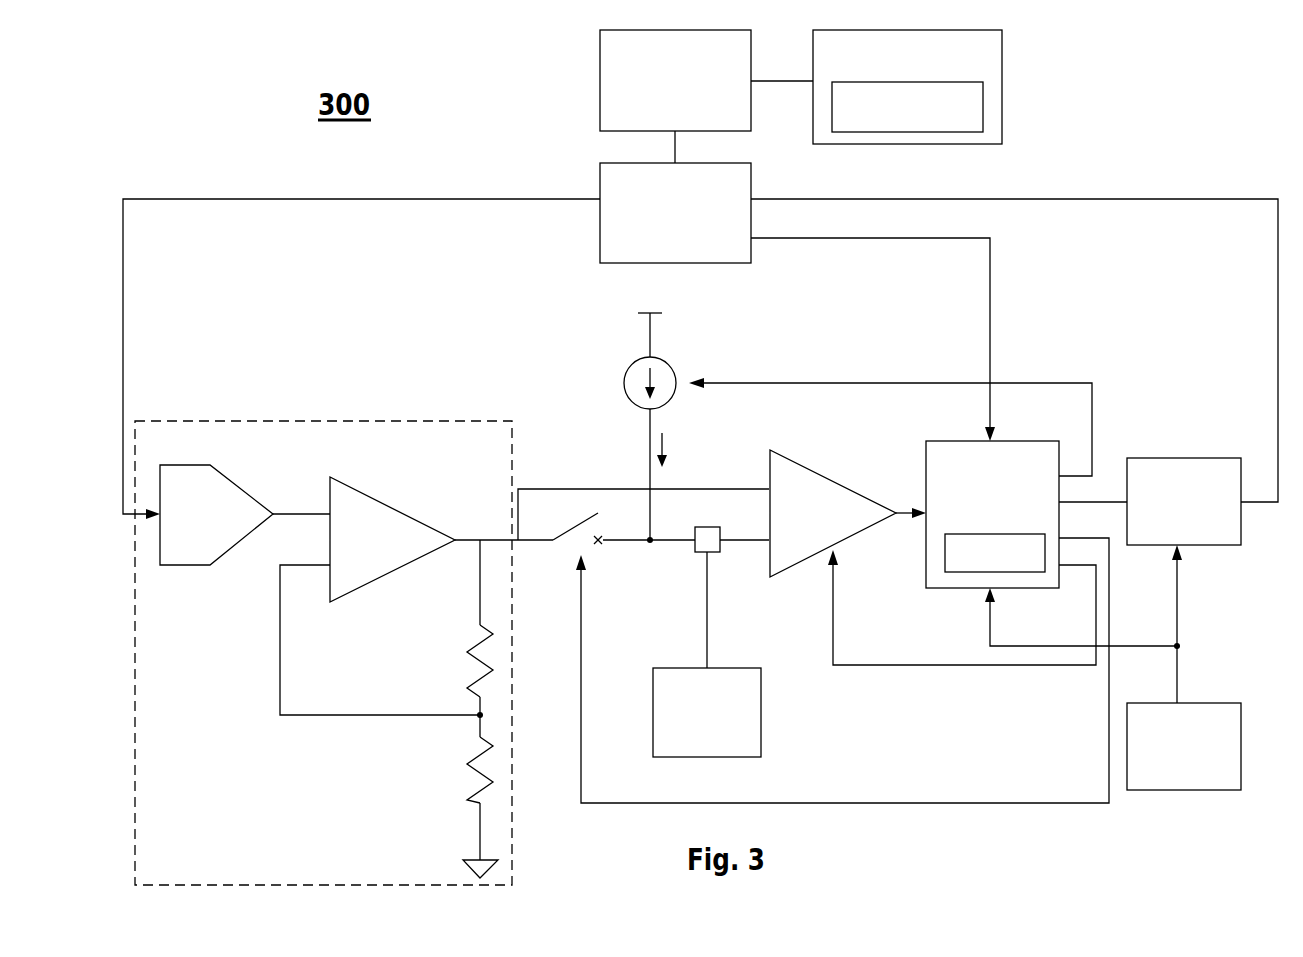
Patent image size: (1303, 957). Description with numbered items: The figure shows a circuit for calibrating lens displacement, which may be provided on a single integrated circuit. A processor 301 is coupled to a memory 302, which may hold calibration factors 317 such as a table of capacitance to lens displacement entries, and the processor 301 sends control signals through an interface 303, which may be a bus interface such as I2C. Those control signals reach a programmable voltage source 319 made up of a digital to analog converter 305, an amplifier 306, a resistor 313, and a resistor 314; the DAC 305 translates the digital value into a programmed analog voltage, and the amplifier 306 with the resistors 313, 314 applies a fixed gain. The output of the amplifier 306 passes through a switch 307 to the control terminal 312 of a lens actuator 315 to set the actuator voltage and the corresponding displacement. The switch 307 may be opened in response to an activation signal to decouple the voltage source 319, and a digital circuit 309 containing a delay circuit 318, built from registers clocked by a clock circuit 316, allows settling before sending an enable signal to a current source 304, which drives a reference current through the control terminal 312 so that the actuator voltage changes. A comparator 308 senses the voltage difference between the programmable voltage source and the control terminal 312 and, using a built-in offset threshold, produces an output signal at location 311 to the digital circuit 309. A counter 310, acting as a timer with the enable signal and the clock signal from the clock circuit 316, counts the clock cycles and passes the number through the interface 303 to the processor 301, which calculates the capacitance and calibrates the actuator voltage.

The processor 301 is at (600, 82).
The memory 302 is at (1002, 63).
The interface circuit 303 is at (600, 174).
The current source 304 is at (666, 363).
The digital to analog converter 305 is at (205, 466).
The amplifier 306 is at (330, 478).
The switch 307 is at (583, 513).
The comparator 308 is at (769, 450).
The digital circuit 309 is at (945, 441).
The counter 310 is at (1195, 458).
The output signal location 311 is at (900, 507).
The control terminal 312 is at (693, 548).
The resistor 313 is at (460, 640).
The resistor 314 is at (473, 749).
The lens actuator 315 is at (744, 668).
The clock circuit 316 is at (1205, 703).
The calibration factors 317 is at (983, 109).
The delay circuit 318 is at (945, 556).
The programmable voltage source 319 is at (371, 420).